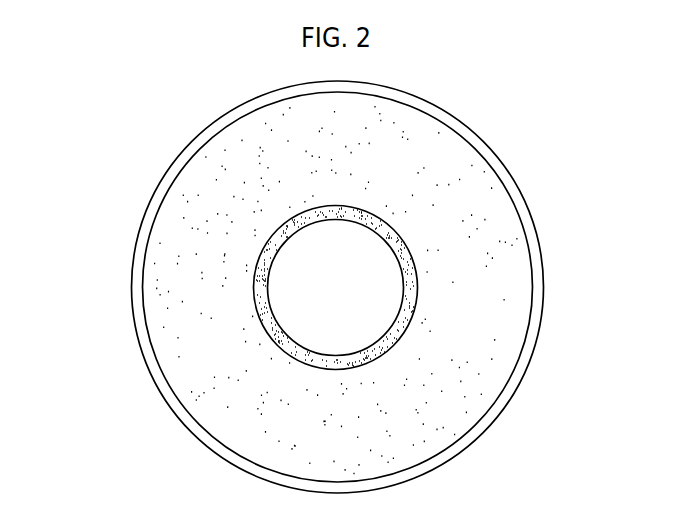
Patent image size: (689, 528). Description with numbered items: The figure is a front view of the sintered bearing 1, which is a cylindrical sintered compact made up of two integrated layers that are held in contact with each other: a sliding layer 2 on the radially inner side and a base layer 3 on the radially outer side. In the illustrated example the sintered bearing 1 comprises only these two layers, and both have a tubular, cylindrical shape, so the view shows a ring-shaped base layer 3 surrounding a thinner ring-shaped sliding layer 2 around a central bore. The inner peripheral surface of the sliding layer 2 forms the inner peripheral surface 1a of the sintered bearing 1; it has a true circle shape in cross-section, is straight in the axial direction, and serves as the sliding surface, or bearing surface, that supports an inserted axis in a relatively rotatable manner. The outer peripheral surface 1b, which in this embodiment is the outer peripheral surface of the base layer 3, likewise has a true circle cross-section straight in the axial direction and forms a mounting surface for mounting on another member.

The sintered bearing 1 is at (524, 149).
The inner peripheral surface 1a is at (268, 279).
The outer peripheral surface 1b is at (152, 199).
The sliding layer 2 is at (266, 329).
The base layer 3 is at (502, 253).